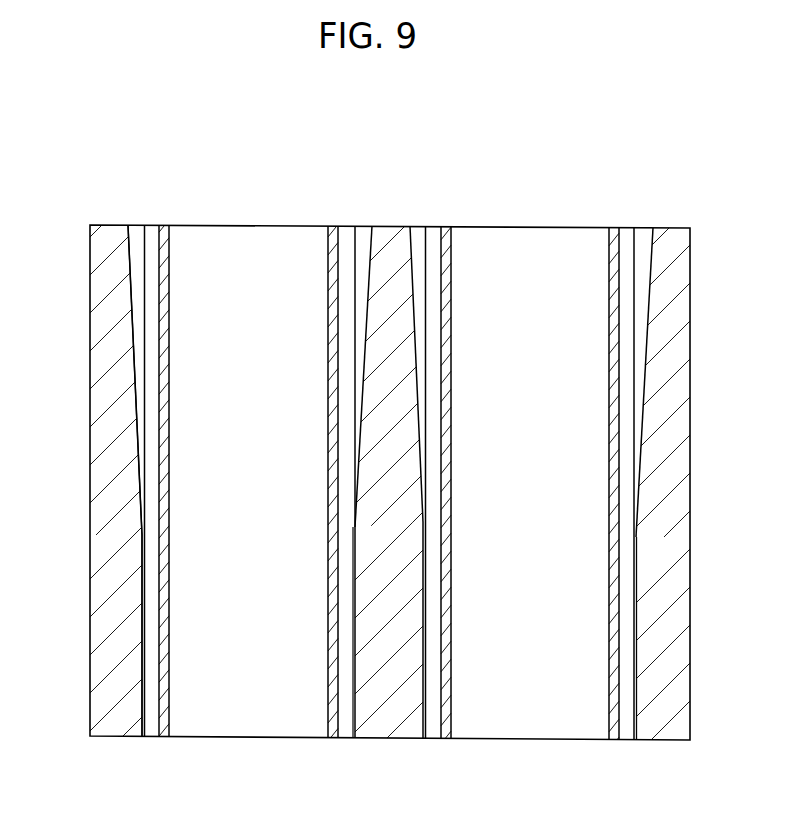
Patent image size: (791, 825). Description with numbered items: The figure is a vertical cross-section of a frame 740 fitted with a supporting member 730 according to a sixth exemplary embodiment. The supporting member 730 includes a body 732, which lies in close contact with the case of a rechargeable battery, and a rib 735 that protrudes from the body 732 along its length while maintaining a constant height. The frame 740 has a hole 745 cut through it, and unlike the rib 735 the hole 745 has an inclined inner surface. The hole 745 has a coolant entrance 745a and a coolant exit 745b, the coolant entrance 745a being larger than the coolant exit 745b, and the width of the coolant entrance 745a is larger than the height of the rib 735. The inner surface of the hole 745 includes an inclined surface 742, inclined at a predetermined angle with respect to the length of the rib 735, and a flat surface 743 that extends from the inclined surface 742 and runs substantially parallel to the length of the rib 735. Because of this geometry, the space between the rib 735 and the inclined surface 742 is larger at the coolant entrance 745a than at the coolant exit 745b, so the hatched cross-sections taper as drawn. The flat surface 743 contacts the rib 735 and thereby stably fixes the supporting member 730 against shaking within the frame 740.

The supporting member 730 is at (320, 719).
The body 732 is at (163, 738).
The rib 735 is at (148, 738).
The frame 740 is at (112, 738).
The inclined surface 742 is at (139, 274).
The flat surface 743 is at (146, 674).
The hole 745 is at (140, 241).
The coolant entrance 745a is at (416, 227).
The coolant exit 745b is at (430, 740).